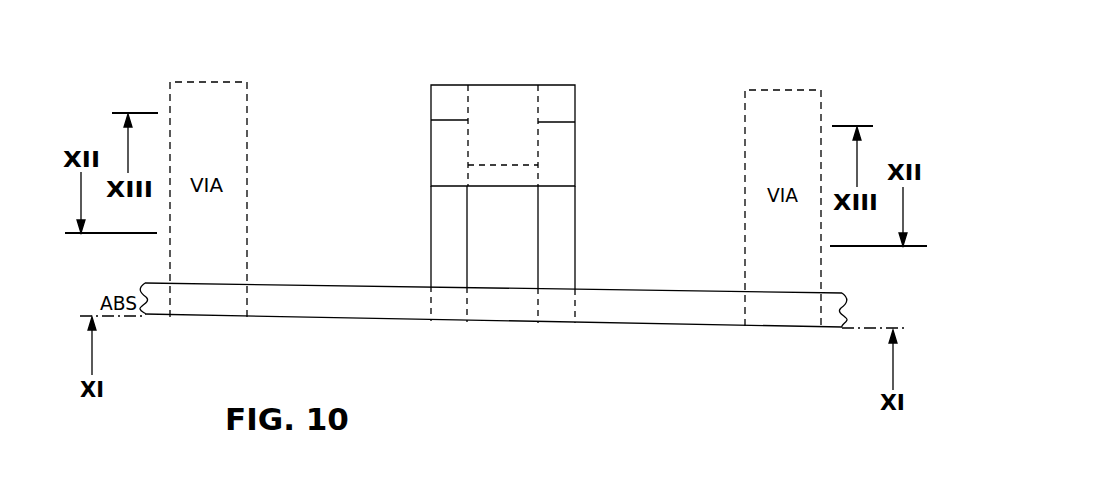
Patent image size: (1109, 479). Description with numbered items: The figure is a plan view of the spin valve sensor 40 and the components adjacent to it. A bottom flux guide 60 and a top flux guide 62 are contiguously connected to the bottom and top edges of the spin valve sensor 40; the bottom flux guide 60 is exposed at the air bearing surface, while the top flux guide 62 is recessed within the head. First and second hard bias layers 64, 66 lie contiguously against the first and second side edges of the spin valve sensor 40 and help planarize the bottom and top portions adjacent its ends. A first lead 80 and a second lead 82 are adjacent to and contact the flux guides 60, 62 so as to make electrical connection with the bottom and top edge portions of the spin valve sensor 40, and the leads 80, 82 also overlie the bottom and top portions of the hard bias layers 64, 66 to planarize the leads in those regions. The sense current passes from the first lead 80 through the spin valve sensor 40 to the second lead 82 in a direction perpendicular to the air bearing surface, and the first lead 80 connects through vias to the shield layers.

The spin valve sensor 40 is at (523, 207).
The bottom flux guide 60 is at (477, 310).
The top flux guide 62 is at (478, 175).
The first hard bias layer 64 is at (567, 263).
The second hard bias layer 66 is at (439, 263).
The first lead 80 is at (522, 315).
The second lead 82 is at (527, 148).